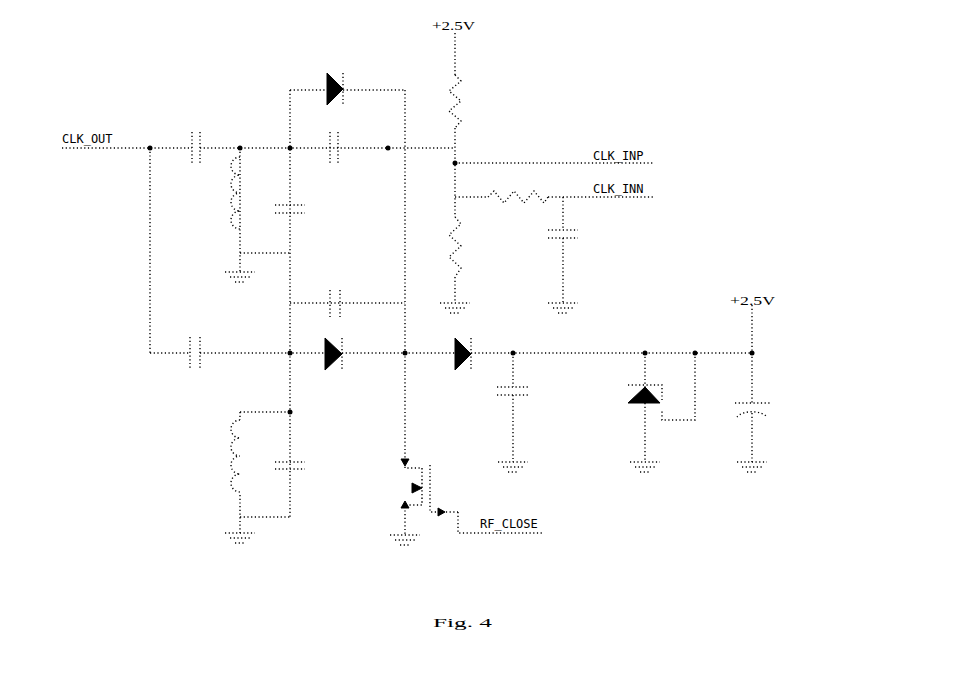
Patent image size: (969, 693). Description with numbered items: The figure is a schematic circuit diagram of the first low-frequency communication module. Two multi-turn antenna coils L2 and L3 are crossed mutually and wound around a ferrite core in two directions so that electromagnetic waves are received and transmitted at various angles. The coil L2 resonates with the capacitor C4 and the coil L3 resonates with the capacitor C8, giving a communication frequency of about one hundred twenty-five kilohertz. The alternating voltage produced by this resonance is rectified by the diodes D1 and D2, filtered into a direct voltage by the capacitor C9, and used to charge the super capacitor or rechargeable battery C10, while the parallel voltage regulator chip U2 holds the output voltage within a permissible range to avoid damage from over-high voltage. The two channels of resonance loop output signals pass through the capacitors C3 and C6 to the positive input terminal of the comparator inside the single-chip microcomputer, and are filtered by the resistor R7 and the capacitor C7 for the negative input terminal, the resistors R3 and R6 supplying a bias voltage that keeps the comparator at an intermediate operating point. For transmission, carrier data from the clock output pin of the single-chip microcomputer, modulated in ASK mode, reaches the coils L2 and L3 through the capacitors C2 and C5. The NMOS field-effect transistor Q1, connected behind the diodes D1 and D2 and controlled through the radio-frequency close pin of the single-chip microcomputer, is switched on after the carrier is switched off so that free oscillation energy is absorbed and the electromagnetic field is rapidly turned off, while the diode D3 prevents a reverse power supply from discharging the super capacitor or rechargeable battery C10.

The capacitor C2 is at (207, 140).
The capacitor C3 is at (347, 141).
The capacitor C4 is at (309, 206).
The capacitor C5 is at (207, 345).
The capacitor C6 is at (347, 295).
The capacitor C7 is at (578, 250).
The capacitor C8 is at (310, 458).
The capacitor C9 is at (528, 407).
The super capacitor or rechargeable battery C10 is at (784, 418).
The antenna coil L2 is at (215, 193).
The antenna coil L3 is at (218, 456).
The diode D1 is at (348, 84).
The diode D2 is at (348, 346).
The diode D3 is at (479, 346).
The resistor R3 is at (464, 101).
The resistor R6 is at (464, 247).
The resistor R7 is at (518, 190).
The NMOS field-effect transistor Q1 is at (450, 497).
The parallel voltage regulator chip U2 is at (629, 407).